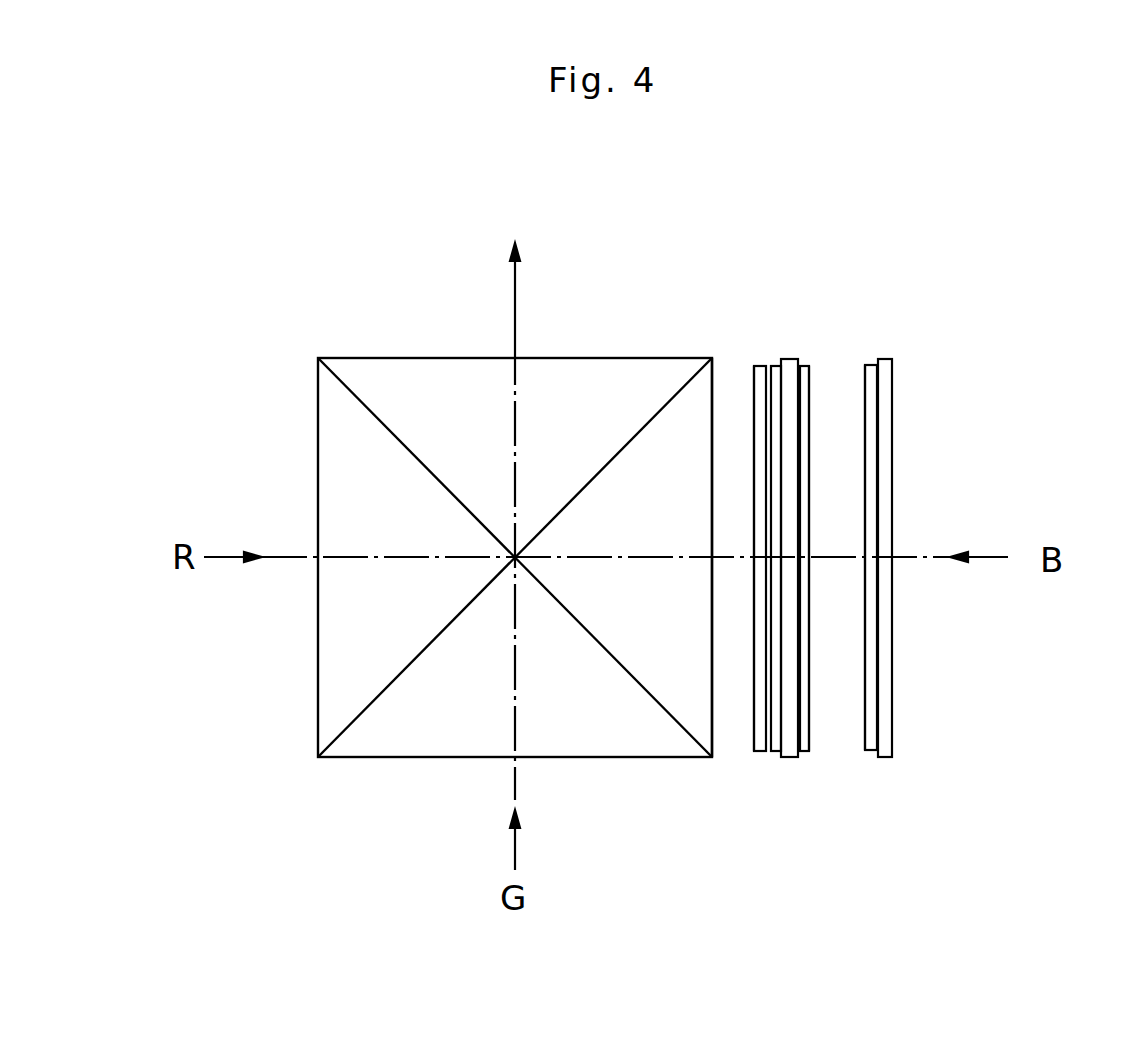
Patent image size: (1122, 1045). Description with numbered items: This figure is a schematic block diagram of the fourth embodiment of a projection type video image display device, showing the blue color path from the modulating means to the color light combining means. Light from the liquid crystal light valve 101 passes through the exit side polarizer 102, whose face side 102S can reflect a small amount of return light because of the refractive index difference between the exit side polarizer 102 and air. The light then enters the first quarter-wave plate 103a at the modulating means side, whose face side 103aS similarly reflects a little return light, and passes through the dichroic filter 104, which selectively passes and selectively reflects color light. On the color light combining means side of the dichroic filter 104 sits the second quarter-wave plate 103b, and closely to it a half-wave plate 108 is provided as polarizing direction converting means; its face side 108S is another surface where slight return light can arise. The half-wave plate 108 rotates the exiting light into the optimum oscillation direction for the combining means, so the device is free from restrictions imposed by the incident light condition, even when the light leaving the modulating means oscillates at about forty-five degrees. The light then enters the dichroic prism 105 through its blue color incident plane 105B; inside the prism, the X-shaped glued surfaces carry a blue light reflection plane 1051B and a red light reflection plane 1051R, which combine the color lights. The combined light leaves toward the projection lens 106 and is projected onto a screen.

The projection lens 106 is at (508, 270).
The dichroic prism 105 is at (475, 742).
The blue light reflection plane 1051B is at (356, 392).
The red light reflection plane 1051R is at (650, 420).
The blue color incident plane 105B is at (713, 393).
The half-wave plate 108 is at (757, 755).
The face side of the half-wave plate 108S is at (752, 728).
The second quarter-wave plate 103b is at (774, 758).
The dichroic filter 104 is at (791, 760).
The first quarter-wave plate 103a is at (804, 368).
The face side of the first quarter-wave plate 103aS is at (810, 378).
The exit side polarizer 102 is at (870, 732).
The face side of the exit side polarizer 102S is at (865, 713).
The liquid crystal light valve 101 is at (887, 622).